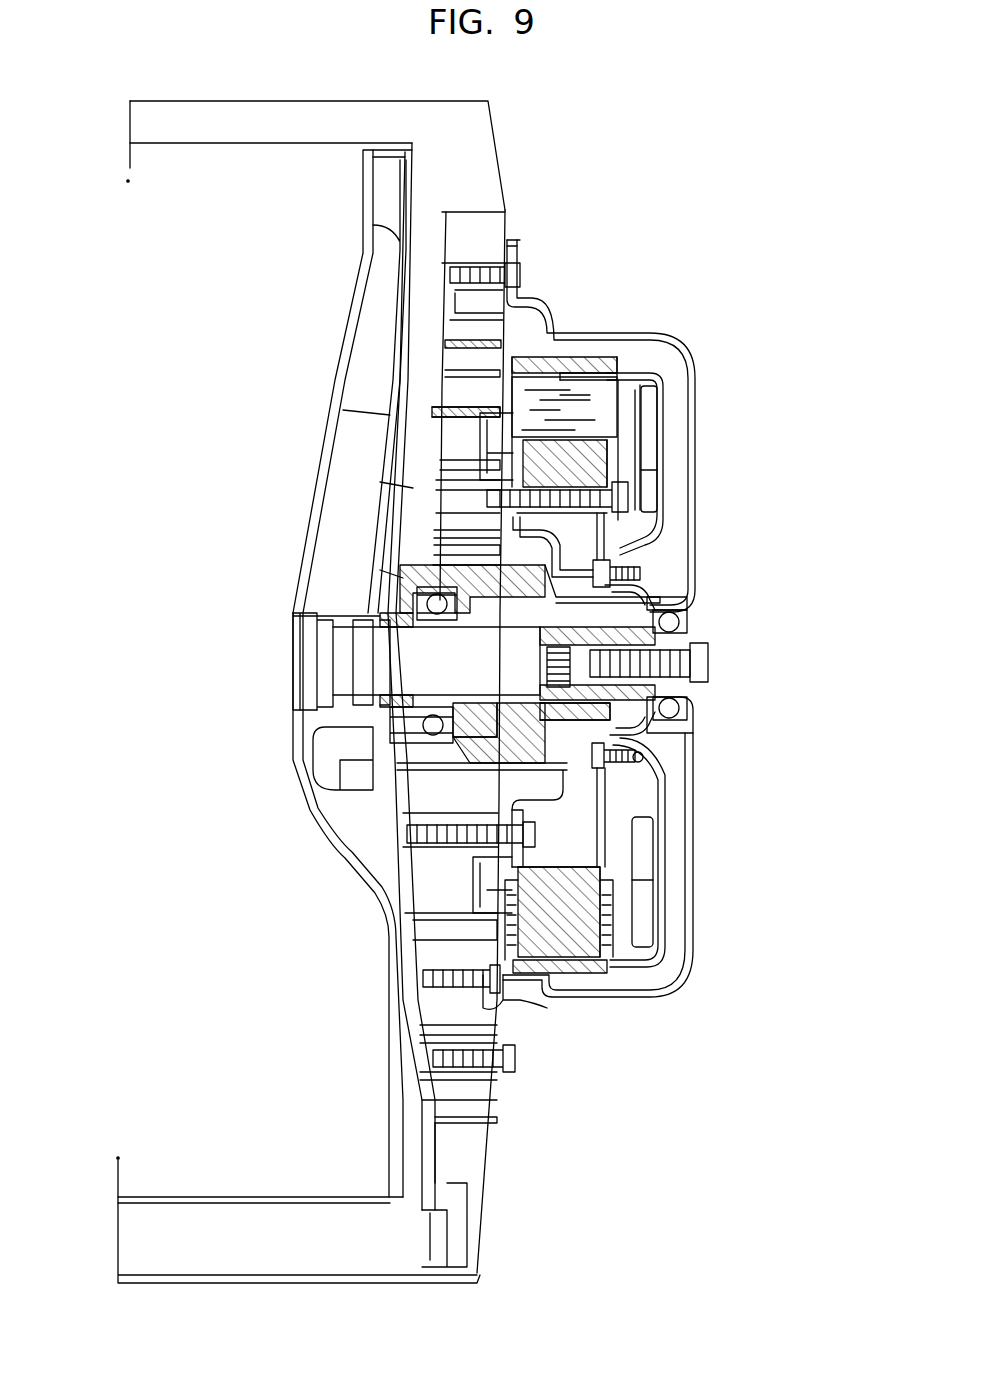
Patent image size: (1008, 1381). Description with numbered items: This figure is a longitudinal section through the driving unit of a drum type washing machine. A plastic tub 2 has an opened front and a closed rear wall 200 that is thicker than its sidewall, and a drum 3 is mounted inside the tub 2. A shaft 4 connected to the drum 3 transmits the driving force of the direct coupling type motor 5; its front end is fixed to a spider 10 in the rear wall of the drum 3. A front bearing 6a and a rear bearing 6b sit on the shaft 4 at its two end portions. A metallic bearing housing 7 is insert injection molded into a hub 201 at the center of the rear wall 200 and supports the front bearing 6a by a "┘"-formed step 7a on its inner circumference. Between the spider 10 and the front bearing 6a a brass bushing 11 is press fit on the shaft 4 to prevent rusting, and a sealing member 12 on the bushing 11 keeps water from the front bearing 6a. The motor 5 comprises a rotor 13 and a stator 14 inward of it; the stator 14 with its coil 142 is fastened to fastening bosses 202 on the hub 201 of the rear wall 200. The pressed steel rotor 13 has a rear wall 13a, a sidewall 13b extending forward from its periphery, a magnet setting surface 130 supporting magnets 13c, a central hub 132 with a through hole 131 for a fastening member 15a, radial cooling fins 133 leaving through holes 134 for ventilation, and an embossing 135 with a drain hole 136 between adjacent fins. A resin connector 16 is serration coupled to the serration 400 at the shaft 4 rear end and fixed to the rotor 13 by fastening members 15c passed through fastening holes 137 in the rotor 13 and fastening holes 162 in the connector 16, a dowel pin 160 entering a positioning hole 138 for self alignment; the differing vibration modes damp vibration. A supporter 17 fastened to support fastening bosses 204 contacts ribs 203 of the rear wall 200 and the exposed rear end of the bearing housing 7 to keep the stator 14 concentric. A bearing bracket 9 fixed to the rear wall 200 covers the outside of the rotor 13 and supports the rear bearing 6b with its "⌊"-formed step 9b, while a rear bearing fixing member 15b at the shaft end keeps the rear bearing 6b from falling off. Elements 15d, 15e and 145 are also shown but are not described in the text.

The tub 2 is at (262, 1283).
The drum 3 is at (213, 1197).
The shaft 4 is at (323, 665).
The motor 5 is at (718, 290).
The front bearing 6a is at (400, 793).
The rear bearing 6b is at (690, 707).
The bearing housing 7 is at (483, 750).
The step 7a is at (387, 683).
The bearing bracket 9 is at (695, 462).
The step 9b is at (660, 705).
The spider 10 is at (310, 582).
The bushing 11 is at (397, 640).
The sealing member 12 is at (393, 737).
The rotor 13 is at (668, 390).
The rear wall 13a is at (652, 513).
The sidewall 13b is at (628, 345).
The magnets 13c is at (532, 305).
The stator 14 is at (618, 395).
The fastening member 15a is at (500, 477).
The rear bearing fixing member 15b is at (700, 672).
The fastening members 15c is at (590, 570).
The bolt 15d is at (500, 980).
The bolt 15e is at (508, 1058).
The connector 16 is at (535, 710).
The supporter 17 is at (520, 1005).
The magnet setting surface 130 is at (589, 358).
The through hole 131 is at (690, 622).
The hub 132 is at (628, 750).
The cooling fins 133 is at (648, 400).
The through holes 134 is at (655, 478).
The embossing 135 is at (662, 905).
The drain hole 136 is at (667, 850).
The fastening holes 137 is at (607, 558).
The positioning holes 138 is at (620, 770).
The coil 142 is at (600, 417).
The stator core 145 is at (592, 940).
The dowel pin 160 is at (645, 757).
The fastening holes 162 is at (618, 584).
The rear wall 200 is at (500, 152).
The hub 201 is at (433, 562).
The fastening bosses 202 is at (430, 487).
The ribs 203 is at (465, 1030).
The support fastening bosses 204 is at (475, 1068).
The serration 400 is at (628, 658).